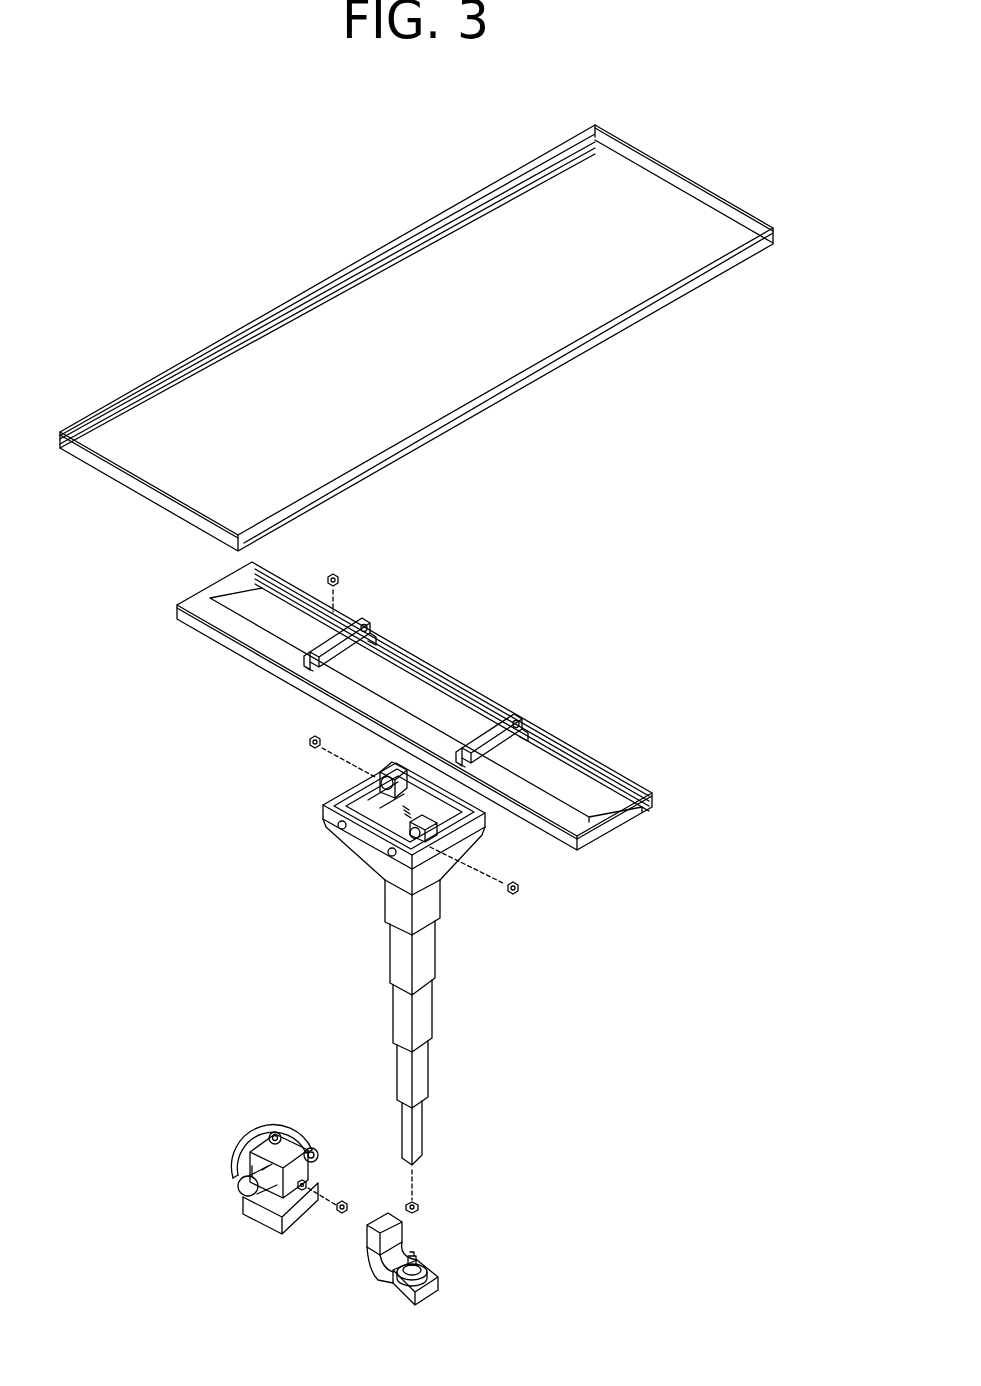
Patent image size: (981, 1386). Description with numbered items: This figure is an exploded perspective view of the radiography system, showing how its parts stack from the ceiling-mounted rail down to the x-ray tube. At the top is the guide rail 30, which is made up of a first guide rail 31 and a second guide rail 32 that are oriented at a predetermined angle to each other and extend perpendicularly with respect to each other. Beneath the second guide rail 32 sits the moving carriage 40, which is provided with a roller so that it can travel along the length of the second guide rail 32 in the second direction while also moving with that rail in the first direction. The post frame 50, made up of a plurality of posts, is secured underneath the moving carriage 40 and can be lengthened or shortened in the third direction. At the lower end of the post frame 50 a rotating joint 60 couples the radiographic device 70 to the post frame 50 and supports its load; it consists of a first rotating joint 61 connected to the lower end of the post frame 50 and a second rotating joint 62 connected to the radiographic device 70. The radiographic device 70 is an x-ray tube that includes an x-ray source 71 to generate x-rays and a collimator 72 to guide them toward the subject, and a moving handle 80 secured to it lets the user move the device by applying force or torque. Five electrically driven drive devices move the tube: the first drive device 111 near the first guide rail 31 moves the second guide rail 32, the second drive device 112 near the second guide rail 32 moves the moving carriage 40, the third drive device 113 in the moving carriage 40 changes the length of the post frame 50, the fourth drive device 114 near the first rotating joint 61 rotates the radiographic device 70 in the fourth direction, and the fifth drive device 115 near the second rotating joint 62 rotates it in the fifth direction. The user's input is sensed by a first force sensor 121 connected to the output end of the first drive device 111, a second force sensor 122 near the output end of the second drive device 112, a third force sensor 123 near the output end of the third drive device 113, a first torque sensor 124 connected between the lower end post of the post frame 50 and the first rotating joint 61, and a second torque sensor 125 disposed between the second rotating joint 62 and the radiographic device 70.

The guide rail 30 is at (128, 518).
The first guide rail 31 is at (187, 514).
The second guide rail 32 is at (187, 595).
The moving carriage 40 is at (410, 828).
The post frame 50 is at (396, 960).
The rotating joint 60 is at (450, 1244).
The first rotating joint 61 is at (430, 1290).
The second rotating joint 62 is at (384, 1220).
The radiographic device 70 is at (258, 1169).
The x-ray source 71 is at (246, 1194).
The collimator 72 is at (265, 1214).
The moving handle 80 is at (237, 1152).
The first drive device 111 is at (358, 622).
The second drive device 112 is at (378, 781).
The third drive device 113 is at (445, 820).
The fourth drive device 114 is at (420, 1262).
The fifth drive device 115 is at (296, 1193).
The first force sensor 121 is at (338, 576).
The second force sensor 122 is at (309, 740).
The third force sensor 123 is at (519, 892).
The first torque sensor 124 is at (419, 1204).
The second torque sensor 125 is at (342, 1200).